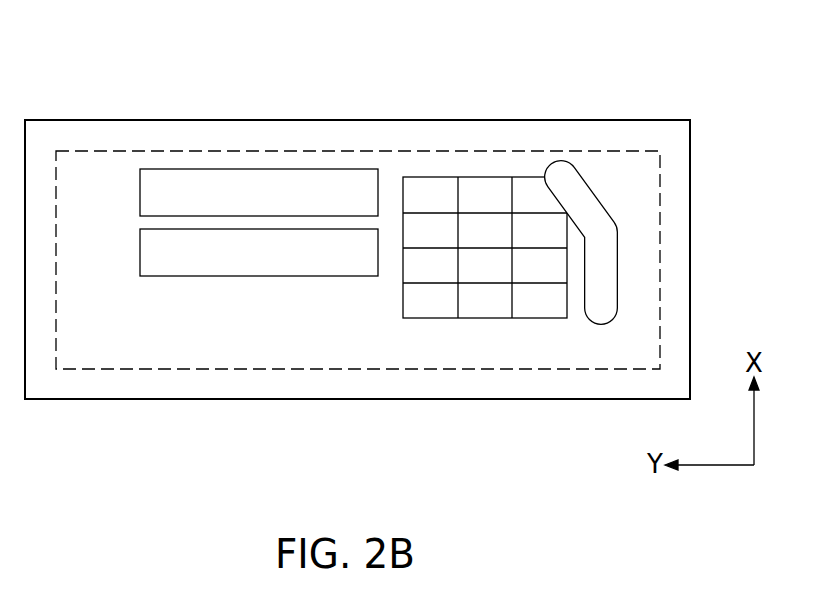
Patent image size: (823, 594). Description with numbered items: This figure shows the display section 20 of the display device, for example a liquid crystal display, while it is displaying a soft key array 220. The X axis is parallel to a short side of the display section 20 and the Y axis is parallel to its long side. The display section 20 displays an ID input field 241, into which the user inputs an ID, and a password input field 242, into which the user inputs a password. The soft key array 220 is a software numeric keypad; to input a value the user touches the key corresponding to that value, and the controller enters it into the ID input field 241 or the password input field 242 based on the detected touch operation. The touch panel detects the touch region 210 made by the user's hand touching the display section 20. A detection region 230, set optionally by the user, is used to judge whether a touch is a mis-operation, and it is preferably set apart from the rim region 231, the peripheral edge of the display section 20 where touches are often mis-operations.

The display section 20 is at (675, 120).
The touch region 210 is at (592, 162).
The soft key array 220 is at (445, 177).
The detection region 230 is at (498, 148).
The rim region 231 is at (215, 135).
The ID input field 241 is at (314, 167).
The password input field 242 is at (322, 277).